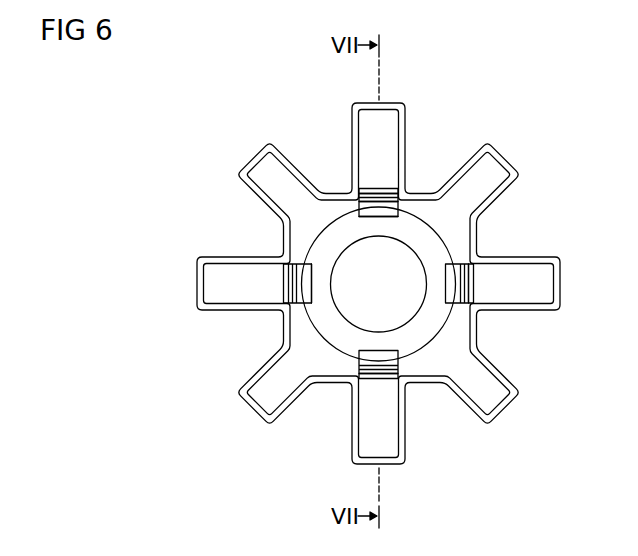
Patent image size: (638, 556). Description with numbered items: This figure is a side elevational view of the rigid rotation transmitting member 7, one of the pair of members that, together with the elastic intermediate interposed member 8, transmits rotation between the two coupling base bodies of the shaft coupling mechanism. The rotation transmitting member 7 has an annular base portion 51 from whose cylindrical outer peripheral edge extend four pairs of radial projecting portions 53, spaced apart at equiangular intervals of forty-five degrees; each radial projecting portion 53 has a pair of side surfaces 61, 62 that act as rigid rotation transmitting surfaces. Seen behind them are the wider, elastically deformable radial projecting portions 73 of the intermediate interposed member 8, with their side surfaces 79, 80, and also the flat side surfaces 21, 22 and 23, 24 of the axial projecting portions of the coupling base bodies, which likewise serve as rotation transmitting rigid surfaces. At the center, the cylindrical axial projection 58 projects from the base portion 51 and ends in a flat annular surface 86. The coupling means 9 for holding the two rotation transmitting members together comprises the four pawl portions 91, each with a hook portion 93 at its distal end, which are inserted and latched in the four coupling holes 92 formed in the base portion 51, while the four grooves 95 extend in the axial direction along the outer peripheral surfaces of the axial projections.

The rotation transmitting member 7 is at (243, 411).
The intermediate interposed member 8 is at (275, 426).
The coupling means 9 is at (281, 286).
The flat side surface 21 is at (358, 112).
The flat side surface 22 is at (518, 176).
The flat side surface 23 is at (502, 168).
The flat side surface 24 is at (404, 157).
The annular base portion 51 is at (373, 390).
The radial projecting portion 53 is at (381, 115).
The axial projection 58 is at (365, 336).
The side surface 61 is at (350, 140).
The side surface 62 is at (412, 172).
The radial projecting portion 73 is at (547, 257).
The side surface 79 is at (352, 172).
The side surface 80 is at (484, 145).
The flat annular surface 86 is at (338, 342).
The pawl portion 91 is at (375, 200).
The coupling hole 92 is at (377, 192).
The hook portion 93 is at (386, 200).
The groove 95 is at (362, 212).